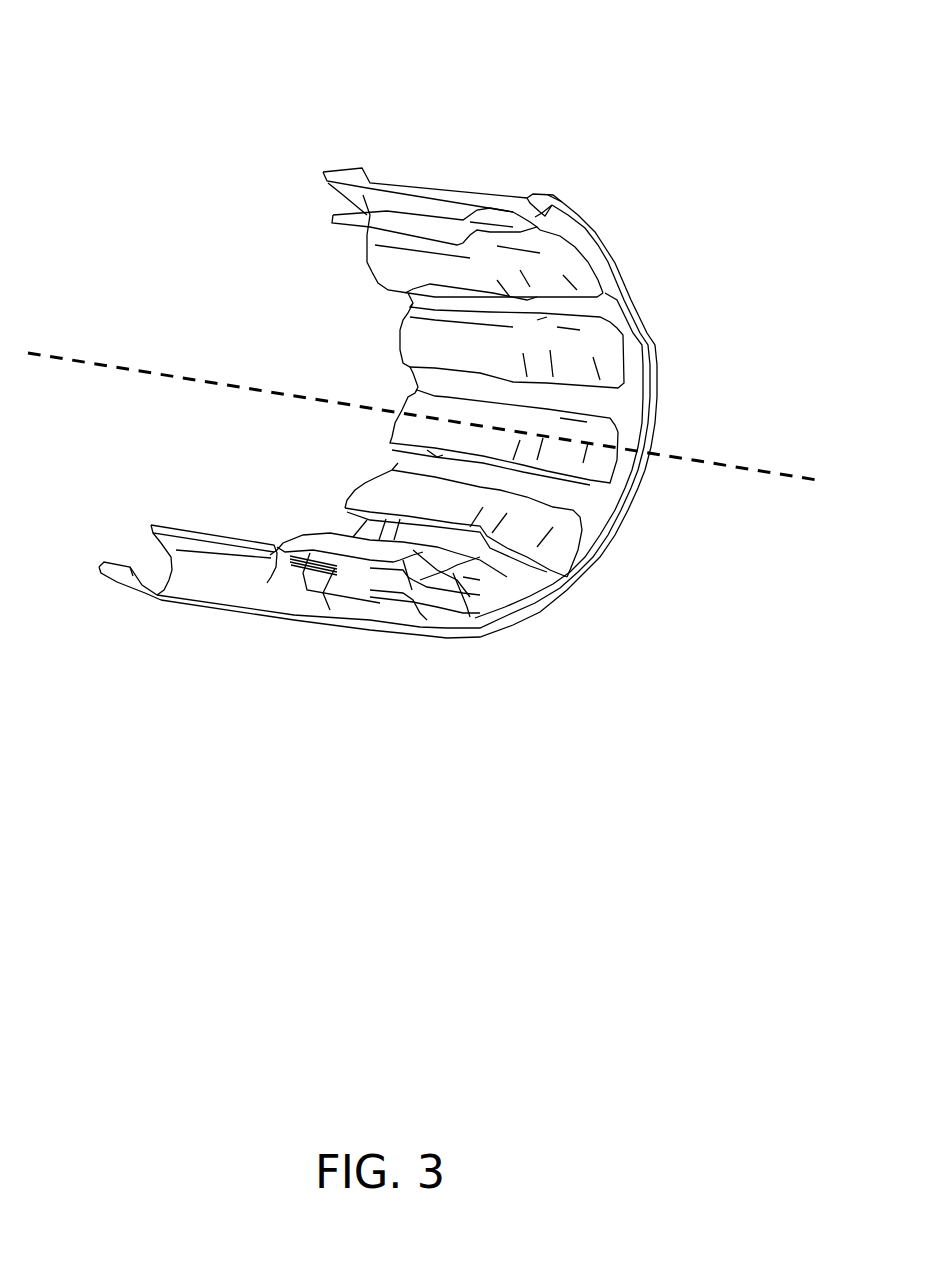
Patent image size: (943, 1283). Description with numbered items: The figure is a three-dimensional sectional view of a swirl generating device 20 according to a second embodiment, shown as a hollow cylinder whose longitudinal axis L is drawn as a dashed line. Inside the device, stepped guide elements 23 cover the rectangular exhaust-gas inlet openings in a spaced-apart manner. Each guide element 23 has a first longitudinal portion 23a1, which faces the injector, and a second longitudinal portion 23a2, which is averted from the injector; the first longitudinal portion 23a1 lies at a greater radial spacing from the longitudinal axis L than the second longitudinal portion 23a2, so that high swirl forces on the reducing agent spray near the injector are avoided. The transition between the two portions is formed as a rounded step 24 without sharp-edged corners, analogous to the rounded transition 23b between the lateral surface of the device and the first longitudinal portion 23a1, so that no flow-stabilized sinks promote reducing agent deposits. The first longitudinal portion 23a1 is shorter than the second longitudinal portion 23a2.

The swirl generating device 20 is at (710, 106).
The guide element 23 is at (435, 340).
The first longitudinal portion 23a1 is at (289, 590).
The second longitudinal portion 23a2 is at (197, 556).
The transition 23b is at (500, 598).
The rounded step 24 is at (456, 213).
The longitudinal axis L is at (760, 470).